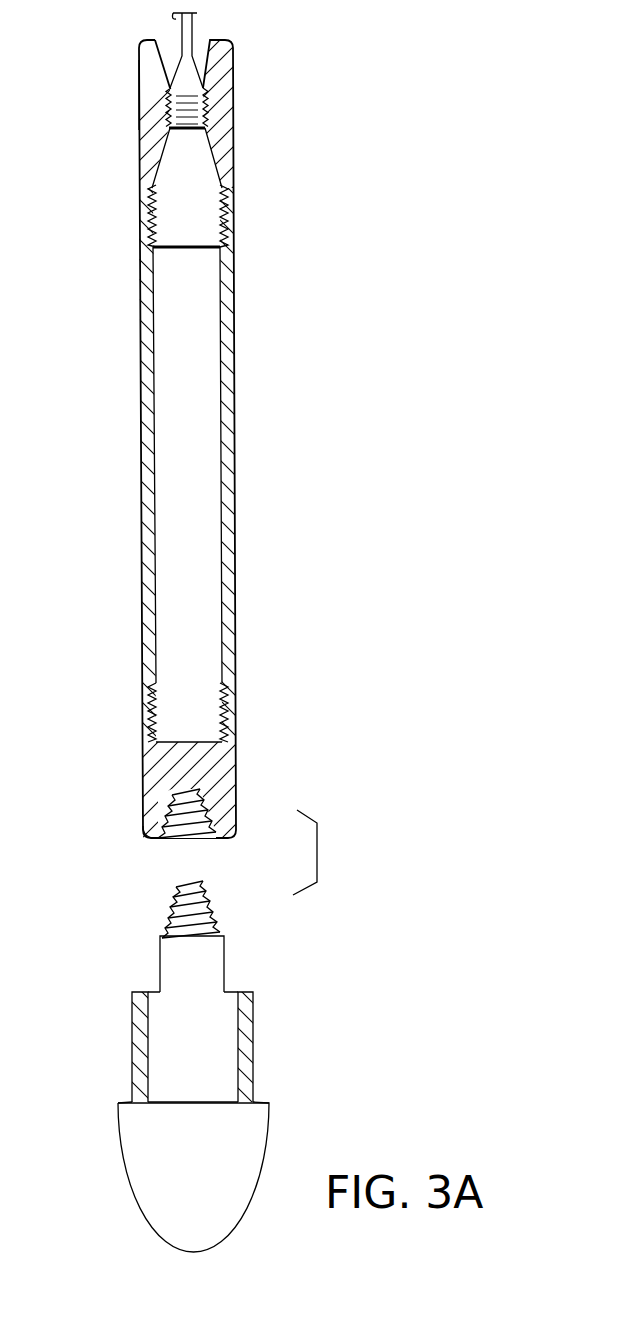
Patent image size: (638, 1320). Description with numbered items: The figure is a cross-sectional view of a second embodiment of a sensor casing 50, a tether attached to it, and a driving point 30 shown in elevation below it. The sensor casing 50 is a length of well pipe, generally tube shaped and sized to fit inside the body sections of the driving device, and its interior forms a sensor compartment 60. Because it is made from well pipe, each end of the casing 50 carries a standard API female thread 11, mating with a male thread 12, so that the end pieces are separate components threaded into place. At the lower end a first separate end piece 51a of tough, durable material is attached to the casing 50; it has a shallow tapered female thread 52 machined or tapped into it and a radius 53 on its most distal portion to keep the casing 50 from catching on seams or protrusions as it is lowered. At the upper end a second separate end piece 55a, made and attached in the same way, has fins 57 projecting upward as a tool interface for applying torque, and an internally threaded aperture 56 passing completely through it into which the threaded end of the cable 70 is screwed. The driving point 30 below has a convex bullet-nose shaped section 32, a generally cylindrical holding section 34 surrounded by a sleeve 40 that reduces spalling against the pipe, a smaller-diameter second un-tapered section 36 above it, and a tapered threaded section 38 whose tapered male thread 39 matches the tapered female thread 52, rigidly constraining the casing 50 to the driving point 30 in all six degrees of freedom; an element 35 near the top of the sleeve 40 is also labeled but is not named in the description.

The driving point 30 is at (250, 1203).
The shaped section 32 is at (148, 1205).
The holding section 34 is at (208, 1060).
The shoulder 35 is at (155, 990).
The second un-tapered section 36 is at (207, 962).
The tapered threaded section 38 is at (215, 907).
The tapered male thread 39 is at (203, 890).
The sleeve 40 is at (255, 1017).
The sensor casing 50 is at (233, 513).
The first separate end piece 51a is at (245, 777).
The tapered female thread 52 is at (172, 837).
The radius 53 is at (142, 830).
The second separate end piece 55a is at (135, 120).
The internally threaded aperture 56 is at (183, 128).
The fins 57 is at (222, 60).
The sensor compartment 60 is at (195, 453).
The cable 70 is at (192, 35).
The female thread 11 is at (150, 228).
The male thread 12 is at (146, 215).